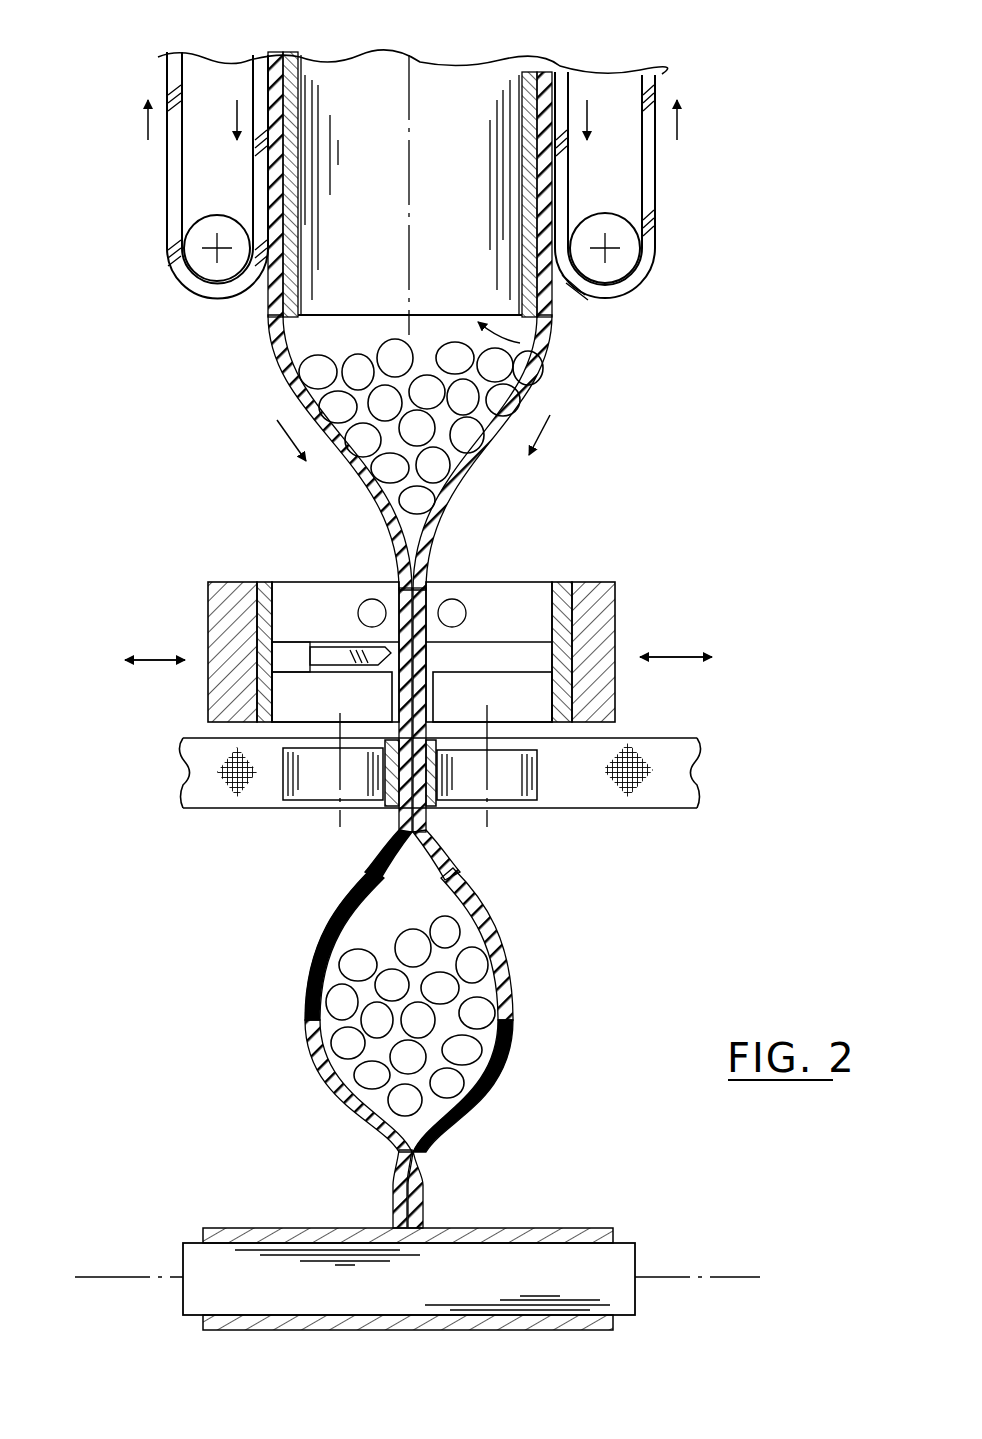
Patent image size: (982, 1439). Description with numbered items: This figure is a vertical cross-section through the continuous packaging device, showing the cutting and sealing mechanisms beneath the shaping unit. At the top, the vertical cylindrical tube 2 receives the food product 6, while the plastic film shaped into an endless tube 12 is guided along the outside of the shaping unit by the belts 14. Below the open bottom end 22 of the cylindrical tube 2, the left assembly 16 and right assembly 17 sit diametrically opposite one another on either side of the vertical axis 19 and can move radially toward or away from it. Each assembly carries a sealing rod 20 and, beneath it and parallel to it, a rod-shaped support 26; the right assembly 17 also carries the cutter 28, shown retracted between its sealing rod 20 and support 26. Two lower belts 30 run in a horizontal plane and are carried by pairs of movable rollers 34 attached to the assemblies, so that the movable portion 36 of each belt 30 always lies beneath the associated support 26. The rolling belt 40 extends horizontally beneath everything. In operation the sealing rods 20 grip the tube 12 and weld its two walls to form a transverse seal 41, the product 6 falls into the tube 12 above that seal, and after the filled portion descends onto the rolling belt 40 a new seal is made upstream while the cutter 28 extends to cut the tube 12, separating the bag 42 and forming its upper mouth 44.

The cylindrical tube 2 is at (377, 118).
The food product 6 is at (500, 395).
The tube 12 is at (288, 155).
The belts 14 is at (167, 172).
The left assembly 16 is at (597, 612).
The right assembly 17 is at (210, 612).
The vertical axis 19 is at (416, 130).
The sealing rods 20 is at (322, 603).
The open bottom end 22 is at (560, 333).
The supports 26 is at (520, 702).
The cutter 28 is at (327, 660).
The lower belts 30 is at (195, 767).
The movable rollers 34 is at (307, 770).
The movable portion of the belt 36 is at (385, 780).
The rolling belt 40 is at (538, 1236).
The transverse seal 41 is at (427, 1190).
The bag 42 is at (513, 1020).
The upper mouth 44 is at (427, 830).